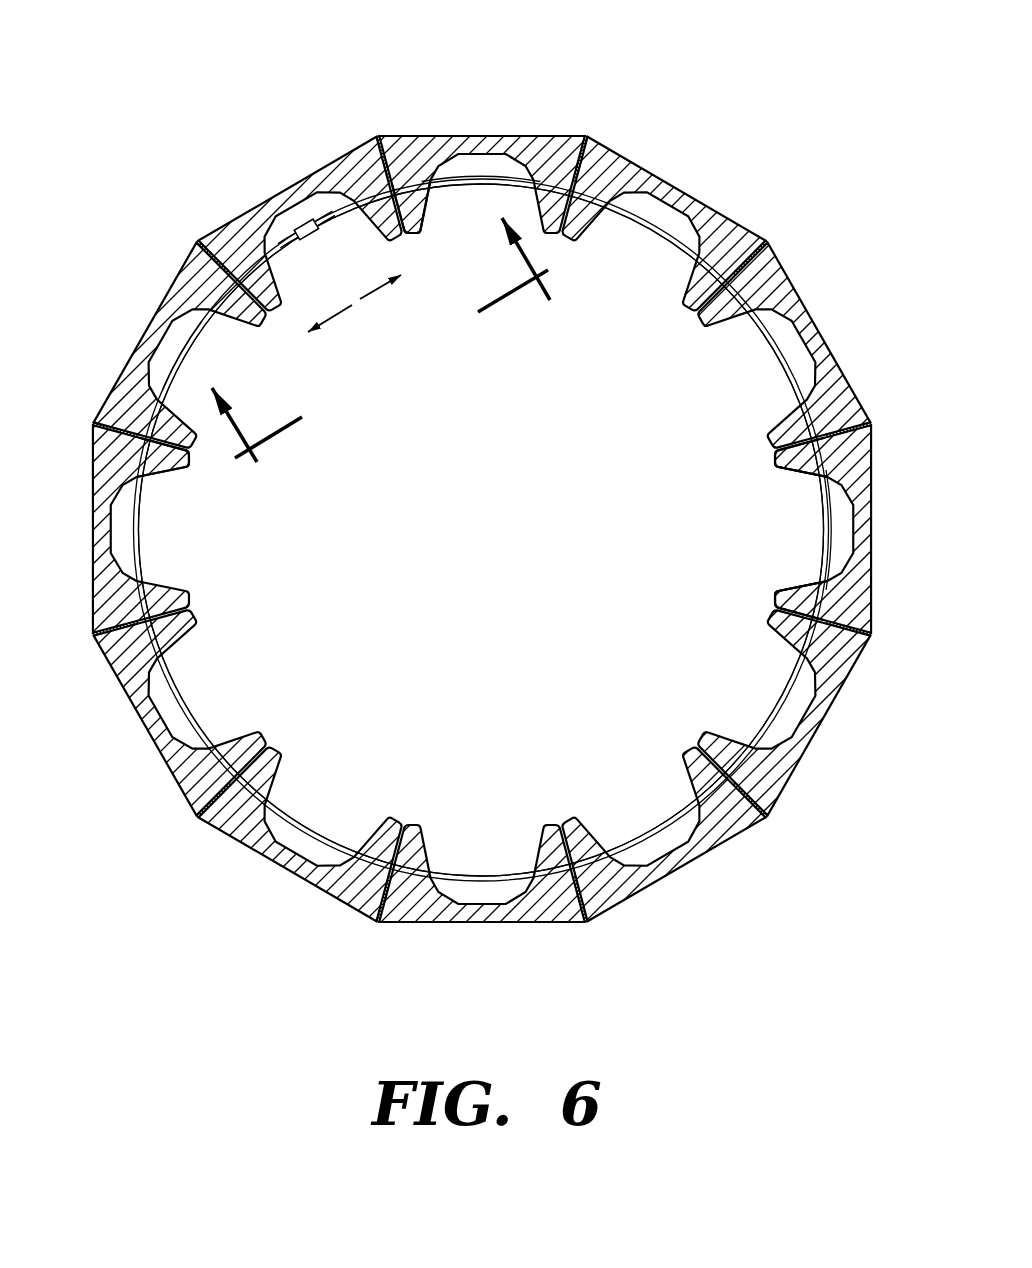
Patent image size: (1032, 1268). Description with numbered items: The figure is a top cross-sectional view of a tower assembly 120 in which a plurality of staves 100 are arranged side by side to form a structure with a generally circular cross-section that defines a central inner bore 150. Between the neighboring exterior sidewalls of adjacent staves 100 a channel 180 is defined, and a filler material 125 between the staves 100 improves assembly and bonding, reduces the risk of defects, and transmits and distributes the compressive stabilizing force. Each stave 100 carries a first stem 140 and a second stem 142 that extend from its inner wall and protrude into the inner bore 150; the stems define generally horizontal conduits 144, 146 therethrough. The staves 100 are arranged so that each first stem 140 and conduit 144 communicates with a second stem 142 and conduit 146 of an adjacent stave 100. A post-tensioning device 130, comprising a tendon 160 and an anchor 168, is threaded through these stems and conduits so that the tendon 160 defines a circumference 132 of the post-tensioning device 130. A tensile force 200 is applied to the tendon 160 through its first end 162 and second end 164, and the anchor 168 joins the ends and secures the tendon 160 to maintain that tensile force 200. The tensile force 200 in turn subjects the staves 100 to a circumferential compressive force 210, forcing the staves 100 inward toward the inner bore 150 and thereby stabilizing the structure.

The stave 100 is at (520, 133).
The tower assembly 120 is at (198, 131).
The filler material 125 is at (397, 136).
The post-tensioning device 130 is at (375, 336).
The circumference 132 is at (188, 696).
The first stem 140 is at (795, 470).
The second stem 142 is at (795, 576).
The conduit 144 is at (822, 482).
The conduit 146 is at (822, 566).
The inner bore 150 is at (452, 547).
The tendon 160 is at (455, 183).
The first end 162 is at (296, 236).
The second end 164 is at (318, 224).
The anchor 168 is at (306, 218).
The channel 180 is at (402, 240).
The tensile force 200 is at (373, 297).
The circumferential compressive force 210 is at (478, 104).